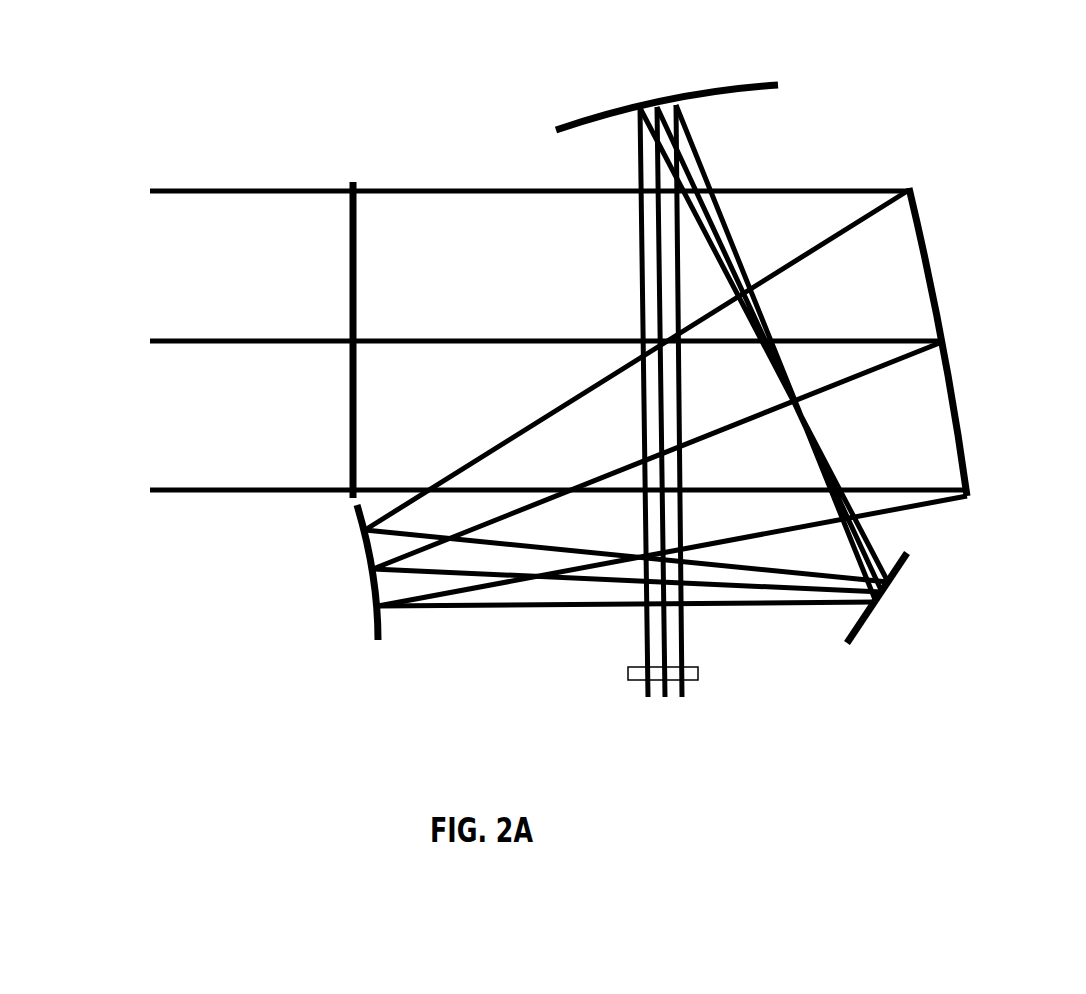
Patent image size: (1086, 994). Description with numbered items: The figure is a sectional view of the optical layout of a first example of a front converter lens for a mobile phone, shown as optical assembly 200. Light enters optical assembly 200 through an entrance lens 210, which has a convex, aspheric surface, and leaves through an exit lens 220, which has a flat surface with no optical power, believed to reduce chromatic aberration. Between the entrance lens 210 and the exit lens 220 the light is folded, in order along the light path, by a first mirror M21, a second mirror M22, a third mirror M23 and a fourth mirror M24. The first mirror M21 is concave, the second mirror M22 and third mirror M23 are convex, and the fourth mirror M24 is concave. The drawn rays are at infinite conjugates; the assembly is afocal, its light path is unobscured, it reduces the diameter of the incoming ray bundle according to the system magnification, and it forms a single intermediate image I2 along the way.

The optical assembly 200 is at (945, 666).
The entrance lens 210 is at (351, 300).
The first mirror M21 is at (913, 242).
The second mirror M22 is at (367, 585).
The third mirror M23 is at (883, 598).
The fourth mirror M24 is at (655, 100).
The intermediate image I2 is at (808, 437).
The exit lens 220 is at (700, 673).